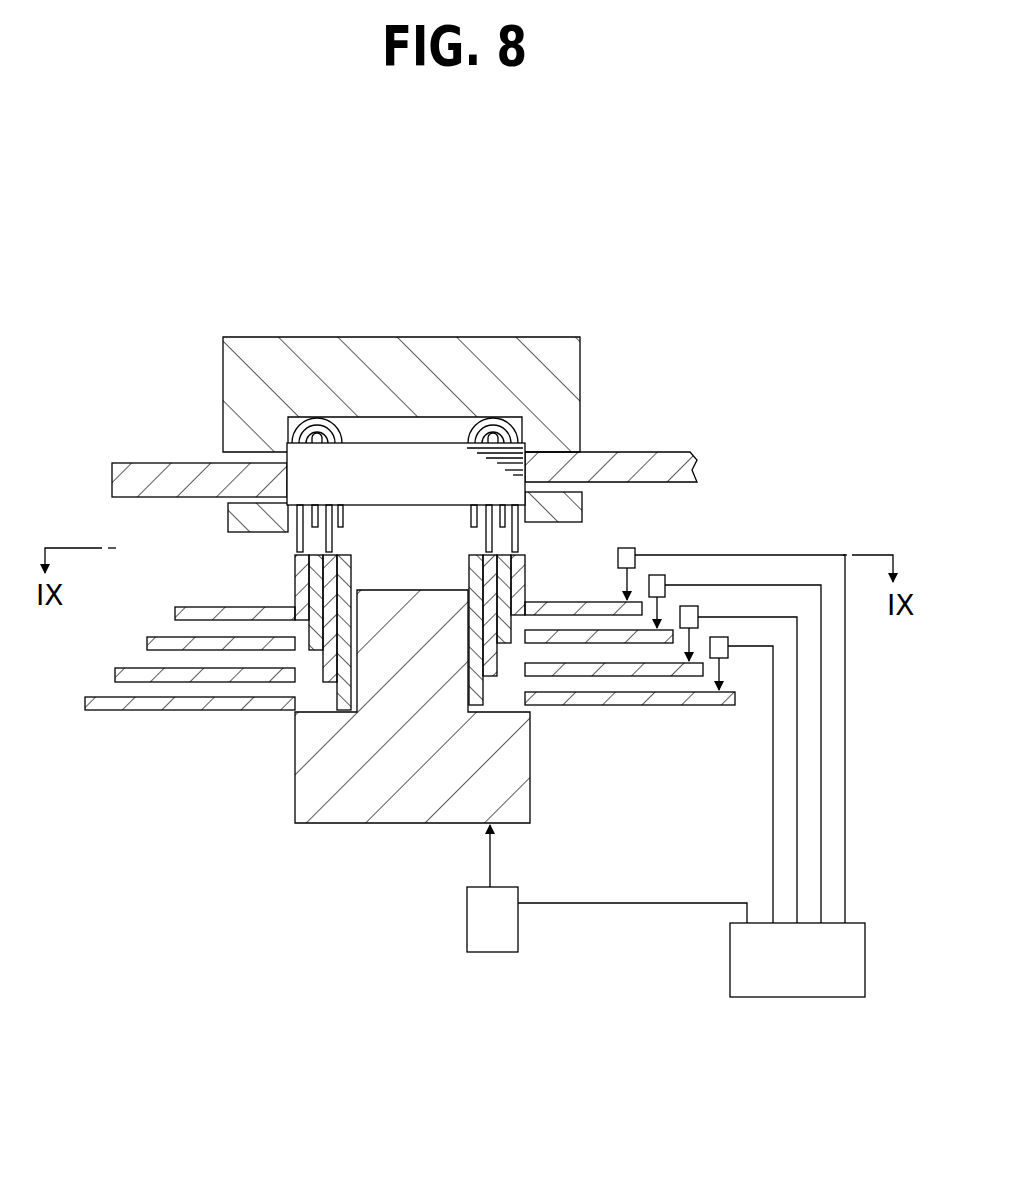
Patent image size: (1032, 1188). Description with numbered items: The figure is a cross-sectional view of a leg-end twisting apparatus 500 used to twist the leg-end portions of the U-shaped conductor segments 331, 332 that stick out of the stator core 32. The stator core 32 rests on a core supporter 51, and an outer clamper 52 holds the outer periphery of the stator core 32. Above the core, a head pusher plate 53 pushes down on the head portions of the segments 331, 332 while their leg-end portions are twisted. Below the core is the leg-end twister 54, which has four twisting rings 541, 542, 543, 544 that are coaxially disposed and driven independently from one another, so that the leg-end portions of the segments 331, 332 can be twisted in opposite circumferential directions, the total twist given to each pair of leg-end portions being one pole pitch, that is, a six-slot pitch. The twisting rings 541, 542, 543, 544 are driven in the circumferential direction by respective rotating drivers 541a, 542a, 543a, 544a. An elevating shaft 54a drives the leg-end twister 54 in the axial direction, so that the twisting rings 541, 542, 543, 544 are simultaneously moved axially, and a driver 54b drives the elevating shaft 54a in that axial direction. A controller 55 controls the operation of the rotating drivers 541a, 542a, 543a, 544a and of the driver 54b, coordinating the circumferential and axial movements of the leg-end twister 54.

The leg-end twisting apparatus 500 is at (373, 330).
The head pusher plate 53 is at (508, 343).
The outer clamper 52 is at (667, 460).
The core supporter 51 is at (575, 508).
The stator core 32 is at (423, 473).
The conductor segment 331 is at (317, 415).
The conductor segment 332 is at (297, 418).
The leg-end twister 54 is at (528, 583).
The elevating shaft 54a is at (328, 758).
The driver 54b is at (467, 916).
The twisting ring 541 is at (300, 563).
The twisting ring 542 is at (302, 583).
The twisting ring 543 is at (313, 603).
The twisting ring 544 is at (347, 630).
The rotating driver 541a is at (633, 552).
The rotating driver 542a is at (663, 580).
The rotating driver 543a is at (695, 610).
The rotating driver 544a is at (728, 657).
The controller 55 is at (740, 965).